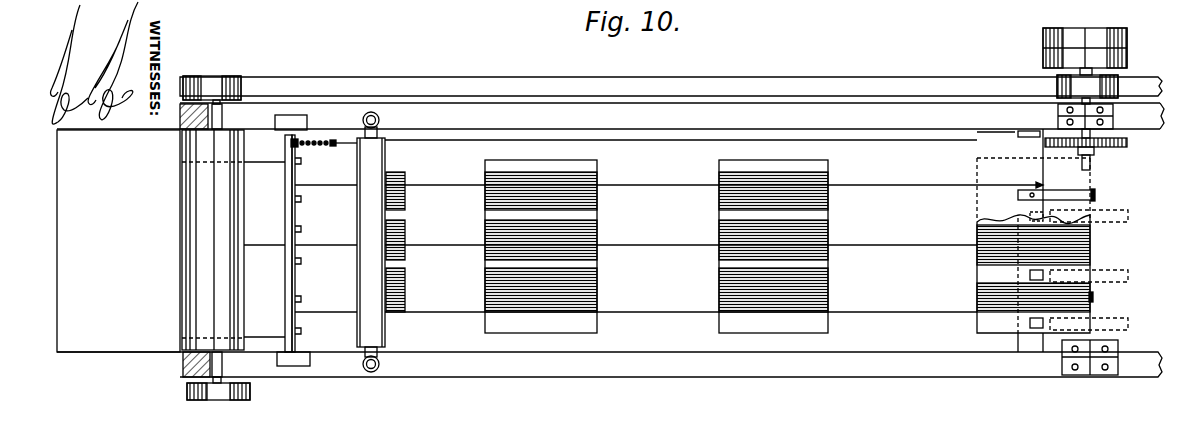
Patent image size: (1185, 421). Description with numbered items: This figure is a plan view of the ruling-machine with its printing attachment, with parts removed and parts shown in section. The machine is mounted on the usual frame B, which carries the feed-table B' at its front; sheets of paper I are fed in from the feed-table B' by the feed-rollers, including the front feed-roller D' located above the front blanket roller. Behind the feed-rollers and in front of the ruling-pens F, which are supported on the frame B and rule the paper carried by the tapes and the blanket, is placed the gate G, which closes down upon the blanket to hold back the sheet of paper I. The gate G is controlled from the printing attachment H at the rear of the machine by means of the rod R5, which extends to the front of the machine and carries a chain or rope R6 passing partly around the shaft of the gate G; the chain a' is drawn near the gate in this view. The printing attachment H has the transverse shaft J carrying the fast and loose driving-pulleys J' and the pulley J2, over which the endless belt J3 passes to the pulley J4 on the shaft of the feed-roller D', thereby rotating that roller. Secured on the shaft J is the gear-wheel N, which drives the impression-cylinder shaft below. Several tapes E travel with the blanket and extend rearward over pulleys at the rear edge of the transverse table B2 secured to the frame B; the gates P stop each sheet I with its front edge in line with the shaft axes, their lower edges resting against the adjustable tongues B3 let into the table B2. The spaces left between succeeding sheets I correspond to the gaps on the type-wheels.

The frame B is at (610, 239).
The feed-table B' is at (118, 241).
The transverse table B2 is at (1008, 189).
The adjustable tongues B3 is at (1062, 197).
The front feed-roller D' is at (223, 240).
The chain a' is at (297, 147).
The chain or rope R6 is at (328, 147).
The rod R5 is at (903, 141).
The gate G is at (300, 243).
The ruling-pens F is at (390, 242).
The sheet of paper I is at (597, 166).
The printing attachment H is at (1057, 271).
The tapes E is at (866, 313).
The gates P is at (1097, 197).
The transverse shaft J is at (1093, 162).
The fast and loose driving-pulleys J' is at (1092, 51).
The pulley J2 is at (1118, 96).
The endless belt J3 is at (857, 86).
The pulley J4 is at (236, 76).
The gear-wheel N is at (1127, 143).